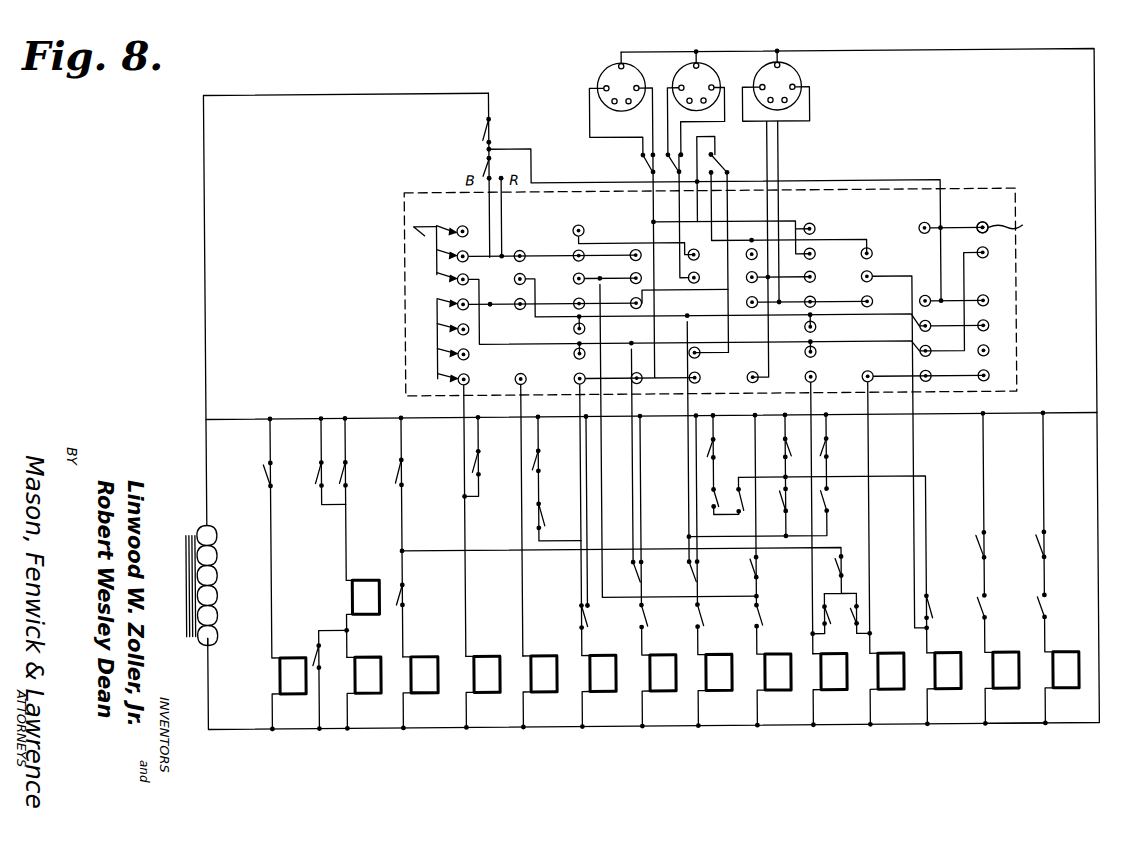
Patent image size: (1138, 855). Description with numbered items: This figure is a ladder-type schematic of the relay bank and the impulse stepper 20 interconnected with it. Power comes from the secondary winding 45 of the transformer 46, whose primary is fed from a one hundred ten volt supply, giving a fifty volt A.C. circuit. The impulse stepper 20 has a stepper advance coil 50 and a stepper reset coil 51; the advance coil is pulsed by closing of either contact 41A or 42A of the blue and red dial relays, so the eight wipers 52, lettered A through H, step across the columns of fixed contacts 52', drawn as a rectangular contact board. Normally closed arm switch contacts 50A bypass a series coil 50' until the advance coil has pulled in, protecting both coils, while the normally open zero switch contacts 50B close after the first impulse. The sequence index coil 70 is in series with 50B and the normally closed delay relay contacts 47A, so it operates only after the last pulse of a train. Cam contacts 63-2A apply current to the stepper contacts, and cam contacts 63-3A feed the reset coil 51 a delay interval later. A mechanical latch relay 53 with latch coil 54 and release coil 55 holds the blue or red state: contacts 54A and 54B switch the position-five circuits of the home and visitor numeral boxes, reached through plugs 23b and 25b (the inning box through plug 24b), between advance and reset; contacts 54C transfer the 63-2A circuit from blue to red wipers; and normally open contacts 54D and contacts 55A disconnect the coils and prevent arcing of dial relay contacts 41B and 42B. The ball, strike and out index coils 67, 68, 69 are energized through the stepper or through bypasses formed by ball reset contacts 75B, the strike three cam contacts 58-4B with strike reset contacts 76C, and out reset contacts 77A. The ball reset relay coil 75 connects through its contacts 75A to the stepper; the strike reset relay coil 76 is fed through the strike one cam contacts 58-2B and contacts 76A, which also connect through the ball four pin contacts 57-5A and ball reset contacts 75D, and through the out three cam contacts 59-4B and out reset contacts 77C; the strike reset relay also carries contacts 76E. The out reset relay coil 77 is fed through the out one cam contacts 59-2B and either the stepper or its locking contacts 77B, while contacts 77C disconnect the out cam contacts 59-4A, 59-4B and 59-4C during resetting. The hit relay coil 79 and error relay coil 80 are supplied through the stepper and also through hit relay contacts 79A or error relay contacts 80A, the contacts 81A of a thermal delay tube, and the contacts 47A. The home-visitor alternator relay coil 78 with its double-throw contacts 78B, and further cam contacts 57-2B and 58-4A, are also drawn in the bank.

The impulse stepper 20 is at (1010, 190).
The plug 23b is at (606, 70).
The plug 24b is at (688, 62).
The plug 25b is at (804, 78).
The secondary winding 45 is at (220, 572).
The transformer 46 is at (193, 528).
The stepper advance coil 50 is at (351, 618).
The series coil 50' is at (352, 694).
The arm switch contacts 50A is at (315, 652).
The zero switch contacts 50B is at (399, 584).
The stepper reset coil 51 is at (278, 674).
The wipers 52 is at (417, 305).
The contacts 52' is at (1014, 220).
The mechanical latch-type relay 53 is at (1033, 687).
The blue-red alternate latch coil 54 is at (991, 674).
The latch relay contacts 54A is at (645, 164).
The latch relay contacts 54B is at (676, 163).
The latch relay contacts 54C is at (484, 166).
The single-throw contact 54D is at (1046, 614).
The release coil 55 is at (1051, 674).
The release coil contact 55A is at (986, 614).
The relay contact 57-2B is at (623, 617).
The ball four pin contacts 57-5A is at (847, 497).
The strike one cam contacts 58-2B is at (678, 616).
The relay contact 58-4A is at (708, 504).
The strike three cam contacts 58-4B is at (534, 516).
The out one cam contacts 59-2B is at (735, 617).
The out cam contacts 59-4A is at (930, 608).
The out three cam contacts 59-4B is at (776, 498).
The out cam contacts 59-4C is at (732, 492).
The sequence cam contact 63-2A is at (486, 124).
The sequence cam contact 63-3A is at (265, 470).
The ball index coil 67 is at (473, 674).
The strike index coil 68 is at (529, 674).
The out index coil 69 is at (588, 674).
The sequence index coil 70 is at (410, 674).
The ball reset relay coil 75 is at (648, 674).
The ball reset relay contacts 75A is at (634, 572).
The ball reset relay contacts 75B is at (482, 462).
The ball reset relay contacts 75D is at (830, 460).
The strike reset relay coil 76 is at (704, 674).
The strike reset relay contacts 76A is at (690, 572).
The strike reset relay contacts 76C is at (544, 462).
The strike reset relay contacts 76E is at (716, 460).
The out reset relay coil 77 is at (763, 674).
The out reset relay contacts 77A is at (578, 619).
The out reset relay contacts 77B is at (760, 560).
The out reset relay contacts 77C is at (780, 458).
The home-visitor alternator relay coil 78 is at (933, 674).
The home-visitor alternator relay contacts 78B is at (724, 164).
The hit relay coil 79 is at (819, 674).
The hit relay contact 79A is at (820, 616).
The error relay coil 80 is at (876, 674).
The error relay contacts 80A is at (858, 616).
The thermal delay tube contacts 81A is at (838, 560).
The blue dial relay contact 41A is at (348, 478).
The blue dial relay contact 41B is at (985, 546).
The red dial relay contact 42A is at (316, 478).
The red dial relay contact 42B is at (1045, 546).
The stepper delay relay contacts 47A is at (399, 458).